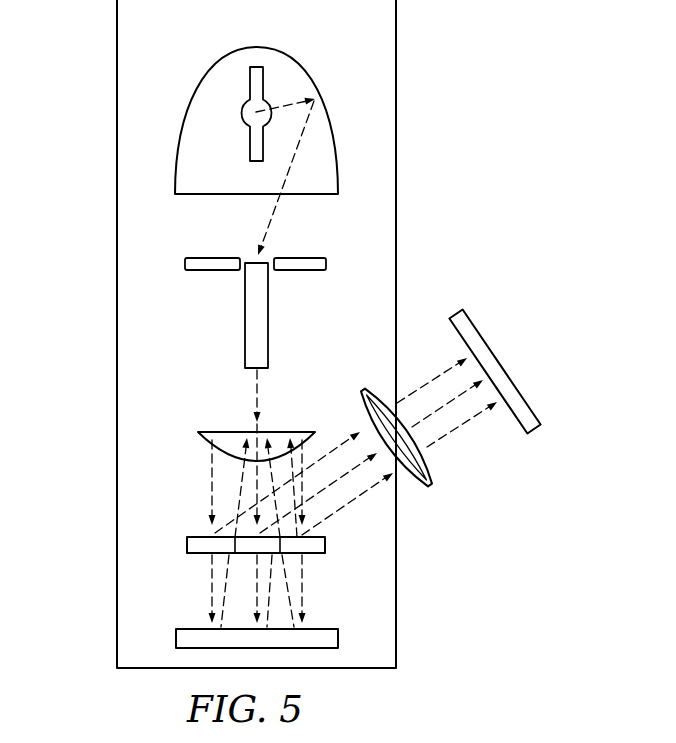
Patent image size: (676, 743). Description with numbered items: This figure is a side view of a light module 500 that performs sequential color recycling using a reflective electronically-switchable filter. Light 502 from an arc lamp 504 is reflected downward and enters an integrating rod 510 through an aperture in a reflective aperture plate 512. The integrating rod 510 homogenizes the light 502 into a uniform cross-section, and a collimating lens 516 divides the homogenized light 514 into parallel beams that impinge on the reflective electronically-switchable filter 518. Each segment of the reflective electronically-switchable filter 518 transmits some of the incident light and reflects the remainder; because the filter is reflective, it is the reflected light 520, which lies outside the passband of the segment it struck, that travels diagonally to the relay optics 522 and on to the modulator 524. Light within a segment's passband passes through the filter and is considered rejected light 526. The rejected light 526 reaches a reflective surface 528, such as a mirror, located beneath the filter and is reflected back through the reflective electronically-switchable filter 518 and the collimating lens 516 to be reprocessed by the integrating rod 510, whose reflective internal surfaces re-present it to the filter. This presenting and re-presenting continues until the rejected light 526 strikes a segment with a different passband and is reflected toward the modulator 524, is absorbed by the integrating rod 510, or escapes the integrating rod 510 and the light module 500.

The light module 500 is at (110, 225).
The light 502 is at (270, 220).
The arc lamp 504 is at (227, 60).
The integrating rod 510 is at (270, 338).
The reflective aperture plate 512 is at (213, 272).
The homogenized light 514 is at (255, 392).
The collimating lens 516 is at (280, 430).
The reflective electronically-switchable filter 518 is at (200, 533).
The reflected light 520 is at (343, 508).
The relay optics 522 is at (440, 488).
The modulator 524 is at (533, 360).
The rejected light 526 is at (240, 497).
The reflective surface 528 is at (197, 627).